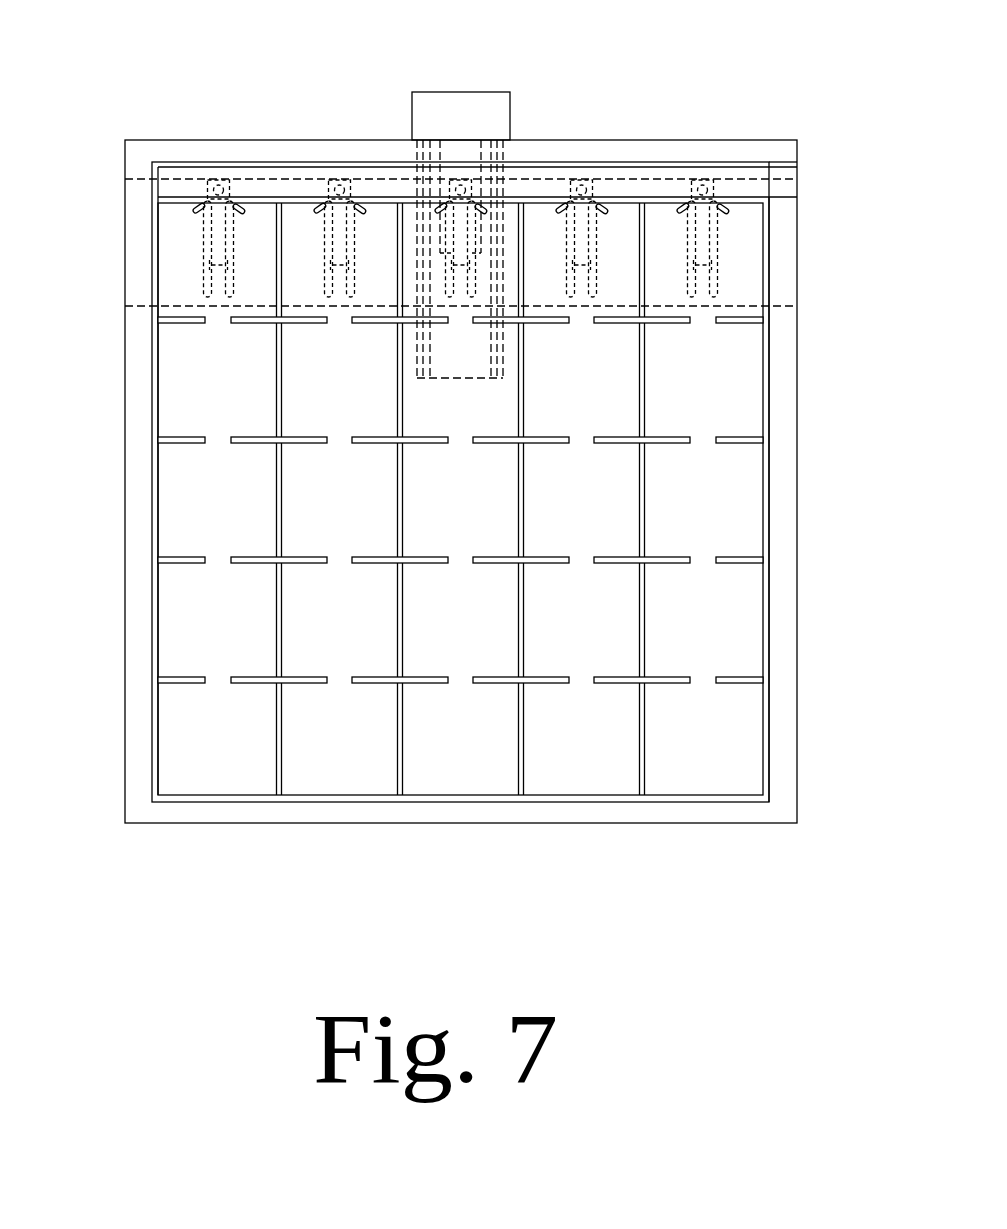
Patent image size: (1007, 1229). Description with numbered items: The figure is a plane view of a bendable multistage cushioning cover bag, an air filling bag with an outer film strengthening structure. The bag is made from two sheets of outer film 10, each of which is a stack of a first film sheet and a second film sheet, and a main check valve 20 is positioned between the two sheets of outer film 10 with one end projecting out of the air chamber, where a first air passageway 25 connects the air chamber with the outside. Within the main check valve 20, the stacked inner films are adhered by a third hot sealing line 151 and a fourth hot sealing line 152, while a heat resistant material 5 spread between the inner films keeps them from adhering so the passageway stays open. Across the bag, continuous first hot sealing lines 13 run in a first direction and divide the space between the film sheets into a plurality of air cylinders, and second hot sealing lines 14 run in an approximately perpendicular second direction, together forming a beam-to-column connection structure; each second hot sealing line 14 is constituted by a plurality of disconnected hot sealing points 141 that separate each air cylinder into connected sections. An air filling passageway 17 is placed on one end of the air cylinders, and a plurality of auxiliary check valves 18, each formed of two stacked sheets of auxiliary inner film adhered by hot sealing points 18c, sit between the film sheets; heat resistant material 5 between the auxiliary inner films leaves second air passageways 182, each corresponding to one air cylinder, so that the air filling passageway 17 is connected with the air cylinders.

The outer film 10 is at (800, 140).
The first hot sealing lines 13 is at (393, 780).
The second hot sealing lines 14 is at (411, 552).
The hot sealing points 141 is at (253, 677).
The third hot sealing line 151 is at (182, 198).
The fourth hot sealing line 152 is at (313, 163).
The air filling passageway 17 is at (770, 189).
The auxiliary check valves 18 is at (153, 192).
The hot sealing points 18c is at (707, 178).
The second air passageways 182 is at (220, 286).
The main check valve 20 is at (481, 219).
The first air passageway 25 is at (460, 344).
The heat resistant material 5 is at (397, 192).